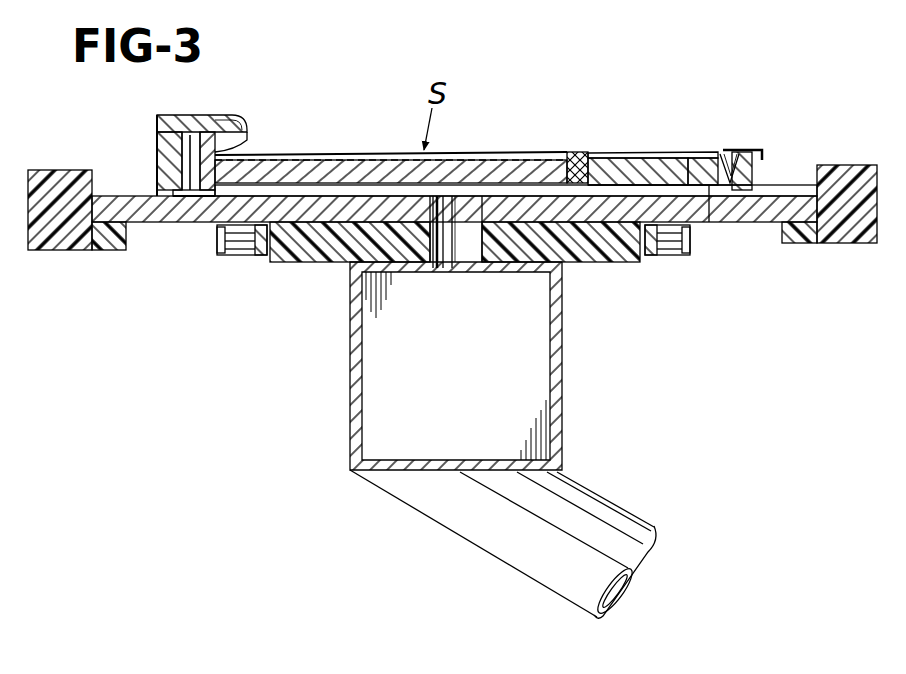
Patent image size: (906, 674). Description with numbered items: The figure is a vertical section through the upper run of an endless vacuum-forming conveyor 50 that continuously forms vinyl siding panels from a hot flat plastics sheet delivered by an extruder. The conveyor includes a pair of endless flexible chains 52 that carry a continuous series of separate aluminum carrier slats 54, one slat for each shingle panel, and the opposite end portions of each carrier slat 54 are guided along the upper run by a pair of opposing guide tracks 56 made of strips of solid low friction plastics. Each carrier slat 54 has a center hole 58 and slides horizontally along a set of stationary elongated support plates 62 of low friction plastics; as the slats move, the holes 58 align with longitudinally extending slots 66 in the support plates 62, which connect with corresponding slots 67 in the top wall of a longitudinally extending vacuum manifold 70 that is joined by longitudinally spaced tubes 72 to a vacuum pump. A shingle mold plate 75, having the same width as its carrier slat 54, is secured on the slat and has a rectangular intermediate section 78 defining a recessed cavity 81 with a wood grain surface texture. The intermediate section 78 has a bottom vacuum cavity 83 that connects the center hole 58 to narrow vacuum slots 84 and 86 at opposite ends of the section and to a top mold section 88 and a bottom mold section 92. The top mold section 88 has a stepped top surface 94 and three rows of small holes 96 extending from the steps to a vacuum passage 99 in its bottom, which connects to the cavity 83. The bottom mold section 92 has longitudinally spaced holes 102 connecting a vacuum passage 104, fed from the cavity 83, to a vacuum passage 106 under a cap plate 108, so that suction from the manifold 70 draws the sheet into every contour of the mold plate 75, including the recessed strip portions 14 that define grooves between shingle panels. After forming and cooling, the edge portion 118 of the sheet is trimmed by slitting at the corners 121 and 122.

The recessed strip portion 14 is at (482, 150).
The endless vacuum-forming conveyor 50 is at (222, 285).
The endless flexible length chain 52 is at (240, 245).
The carrier slat 54 is at (145, 215).
The guide track 56 is at (98, 243).
The center hole 58 is at (426, 245).
The support plate 62 is at (608, 263).
The slot 66 is at (455, 240).
The slot 67 is at (467, 268).
The vacuum manifold 70 is at (350, 372).
The tube 72 is at (452, 520).
The shingle mold plate 75 is at (152, 161).
The intermediate section 78 is at (455, 188).
The recessed cavity 81 is at (333, 152).
The bottom vacuum cavity 83 is at (375, 186).
The vacuum slot 84 is at (250, 157).
The vacuum slot 86 is at (570, 158).
The top mold section 88 is at (602, 162).
The bottom mold section 92 is at (162, 177).
The stepped top surface 94 is at (638, 164).
The small holes 96 is at (672, 156).
The vacuum passage 99 is at (712, 205).
The holes 102 is at (190, 122).
The vacuum passage 104 is at (193, 197).
The vacuum passage 106 is at (208, 118).
The cap plate 108 is at (158, 118).
The edge portion 118 is at (730, 151).
The corner 121 is at (245, 130).
The corner 122 is at (716, 153).